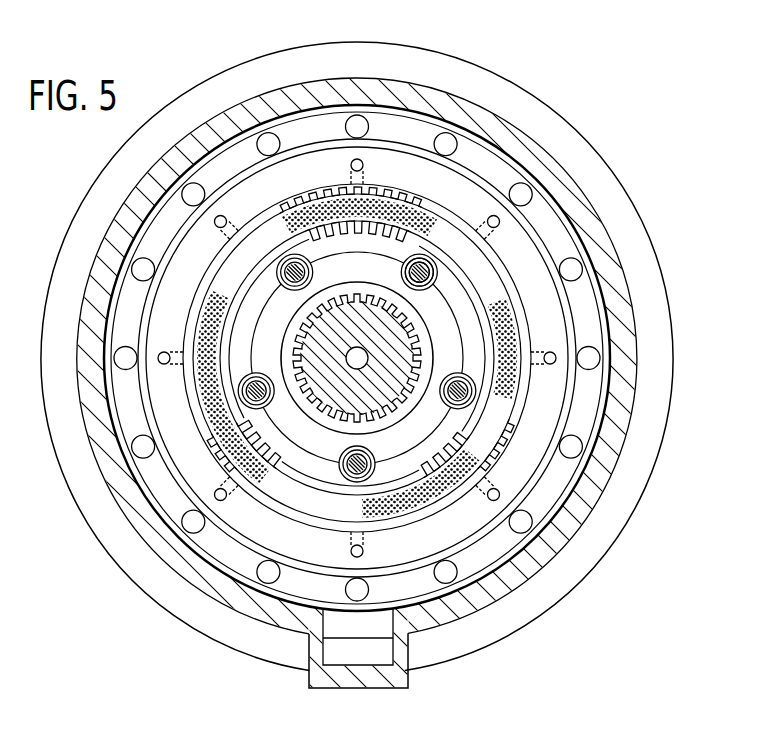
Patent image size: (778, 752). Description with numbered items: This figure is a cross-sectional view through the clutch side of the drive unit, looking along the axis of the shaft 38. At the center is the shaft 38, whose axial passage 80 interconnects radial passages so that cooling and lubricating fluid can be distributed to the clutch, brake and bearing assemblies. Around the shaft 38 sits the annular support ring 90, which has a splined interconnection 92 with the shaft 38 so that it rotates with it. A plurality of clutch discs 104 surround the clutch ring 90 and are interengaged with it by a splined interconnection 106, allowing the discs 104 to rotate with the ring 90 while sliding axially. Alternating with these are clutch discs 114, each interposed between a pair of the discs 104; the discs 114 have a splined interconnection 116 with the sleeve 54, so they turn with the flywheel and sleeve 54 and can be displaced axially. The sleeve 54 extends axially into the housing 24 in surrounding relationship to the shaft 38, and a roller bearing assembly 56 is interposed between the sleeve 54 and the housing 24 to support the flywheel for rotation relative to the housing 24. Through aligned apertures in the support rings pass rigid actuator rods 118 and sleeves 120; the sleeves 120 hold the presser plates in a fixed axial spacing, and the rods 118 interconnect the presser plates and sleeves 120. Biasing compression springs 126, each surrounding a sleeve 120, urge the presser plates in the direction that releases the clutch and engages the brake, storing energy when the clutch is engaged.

The housing 24 is at (541, 153).
The roller bearing assembly 56 is at (549, 204).
The sleeve 54 is at (530, 258).
The clutch discs 114 is at (434, 208).
The splined interconnection 116 is at (386, 187).
The clutch discs 104 is at (333, 203).
The splined interconnection 106 is at (317, 223).
The biasing compression springs 126 is at (410, 266).
The sleeves 120 is at (440, 272).
The actuator rods 118 is at (427, 270).
The annular support ring 90 is at (428, 352).
The splined interconnection 92 is at (413, 330).
The shaft 38 is at (391, 397).
The axial passage 80 is at (382, 345).